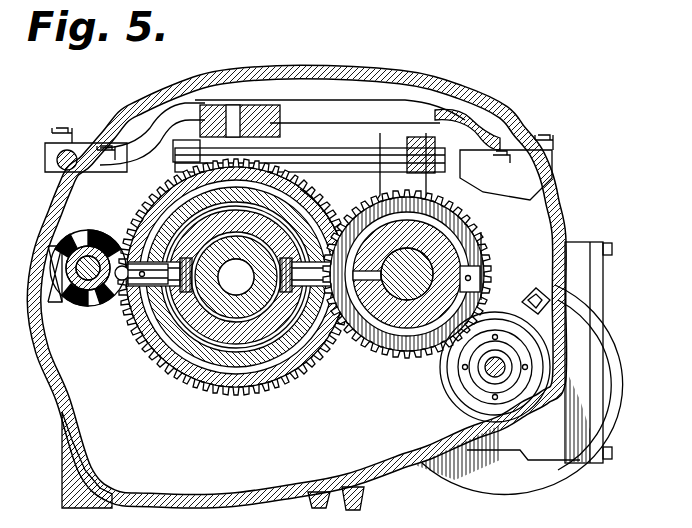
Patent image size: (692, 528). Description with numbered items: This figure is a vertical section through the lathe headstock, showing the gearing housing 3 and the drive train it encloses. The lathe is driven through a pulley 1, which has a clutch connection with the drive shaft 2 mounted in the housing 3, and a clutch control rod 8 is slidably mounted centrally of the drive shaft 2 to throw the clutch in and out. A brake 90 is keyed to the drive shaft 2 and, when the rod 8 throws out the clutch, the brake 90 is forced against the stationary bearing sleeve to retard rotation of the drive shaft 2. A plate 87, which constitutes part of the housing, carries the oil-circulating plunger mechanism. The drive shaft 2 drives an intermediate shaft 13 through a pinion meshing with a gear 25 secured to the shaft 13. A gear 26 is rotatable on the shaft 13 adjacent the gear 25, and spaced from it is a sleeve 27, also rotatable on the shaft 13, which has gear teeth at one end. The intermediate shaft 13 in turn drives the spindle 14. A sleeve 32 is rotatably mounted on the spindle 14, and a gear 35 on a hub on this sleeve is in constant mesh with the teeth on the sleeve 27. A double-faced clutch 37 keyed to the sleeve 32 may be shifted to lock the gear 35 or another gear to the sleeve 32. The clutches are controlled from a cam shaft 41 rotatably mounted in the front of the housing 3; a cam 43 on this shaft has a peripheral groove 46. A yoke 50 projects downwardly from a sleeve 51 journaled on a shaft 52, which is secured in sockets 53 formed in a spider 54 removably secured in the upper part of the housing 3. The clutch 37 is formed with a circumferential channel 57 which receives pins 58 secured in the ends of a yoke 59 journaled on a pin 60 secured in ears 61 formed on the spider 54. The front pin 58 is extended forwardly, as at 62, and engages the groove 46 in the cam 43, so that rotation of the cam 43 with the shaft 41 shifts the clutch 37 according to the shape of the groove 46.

The pulley 1 is at (618, 392).
The drive shaft 2 is at (480, 370).
The gearing housing 3 is at (62, 413).
The clutch control rod 8 is at (498, 372).
The intermediate shaft 13 is at (428, 266).
The spindle 14 is at (222, 292).
The gear 25 is at (395, 340).
The gear 26 is at (382, 340).
The sleeve 27 is at (374, 332).
The sleeve 32 is at (198, 366).
The gear 35 is at (162, 362).
The double-faced clutch 37 is at (228, 366).
The cam shaft 41 is at (45, 298).
The cam 43 is at (97, 240).
The peripheral groove 46 is at (82, 300).
The yoke 50 is at (472, 230).
The sleeve 51 is at (392, 135).
The shaft 52 is at (440, 128).
The sockets 53 is at (478, 140).
The spider 54 is at (350, 118).
The circumferential channel 57 is at (250, 362).
The pins 58 is at (148, 330).
The yoke 59 is at (318, 183).
The pin 60 is at (232, 104).
The ears 61 is at (285, 122).
The extension of pin 62 is at (112, 300).
The plate 87 is at (600, 278).
The brake 90 is at (498, 332).